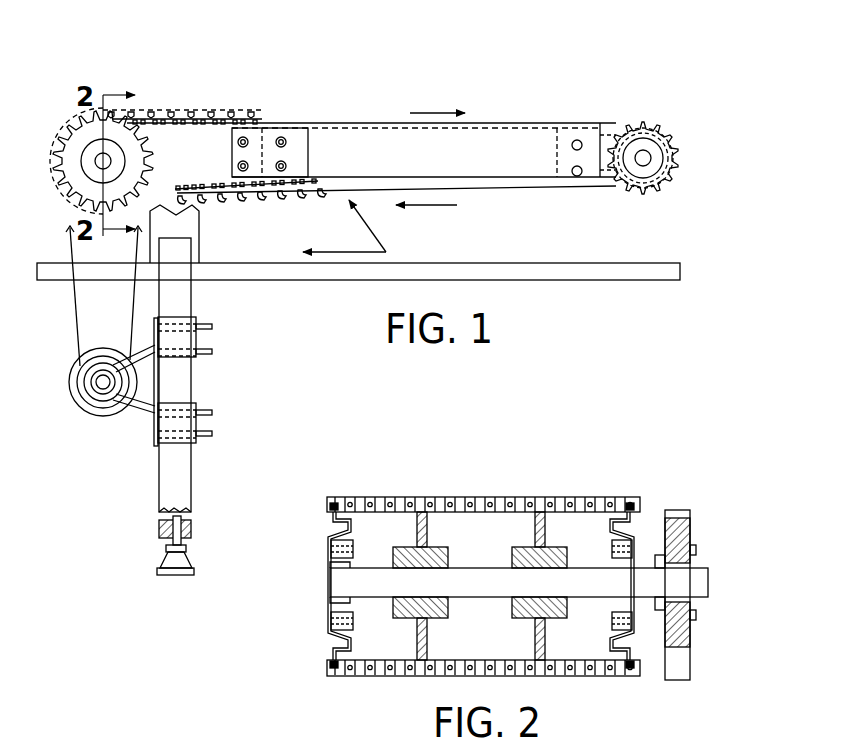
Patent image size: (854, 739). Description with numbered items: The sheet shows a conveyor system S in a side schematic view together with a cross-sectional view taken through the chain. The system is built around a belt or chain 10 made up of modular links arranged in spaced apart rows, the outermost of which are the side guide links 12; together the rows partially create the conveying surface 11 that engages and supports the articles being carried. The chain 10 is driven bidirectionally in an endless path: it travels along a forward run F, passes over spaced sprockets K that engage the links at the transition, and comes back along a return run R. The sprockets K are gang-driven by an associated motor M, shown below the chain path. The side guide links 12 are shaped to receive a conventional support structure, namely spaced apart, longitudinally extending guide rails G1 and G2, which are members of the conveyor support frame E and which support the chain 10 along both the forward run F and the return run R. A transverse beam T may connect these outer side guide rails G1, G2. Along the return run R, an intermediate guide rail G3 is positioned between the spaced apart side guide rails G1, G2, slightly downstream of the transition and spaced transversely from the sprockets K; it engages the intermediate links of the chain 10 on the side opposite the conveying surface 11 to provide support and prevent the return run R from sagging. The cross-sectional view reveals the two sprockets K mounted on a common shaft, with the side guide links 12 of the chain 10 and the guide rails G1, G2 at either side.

In FIG. 1, the chain 10 is at (292, 145).
In FIG. 2, the chain 10 is at (578, 496).
In FIG. 1, the conveying surface 11 is at (185, 100).
In FIG. 2, the conveying surface 11 is at (413, 491).
In FIG. 2, the side guide links 12 is at (328, 509).
In FIG. 1, the sprockets K is at (127, 156).
In FIG. 2, the sprockets K is at (540, 525).
In FIG. 1, the transverse beam T is at (302, 122).
In FIG. 1, the forward run F is at (435, 112).
In FIG. 1, the conveyor system S is at (501, 93).
In FIG. 1, the return run R is at (428, 207).
In FIG. 1, the conveyor support frame E is at (355, 231).
In FIG. 1, the intermediate guide rail G3 is at (336, 180).
In FIG. 2, the guide rail G1 is at (330, 636).
In FIG. 2, the guide rail G2 is at (641, 633).
In FIG. 1, the motor M is at (105, 416).